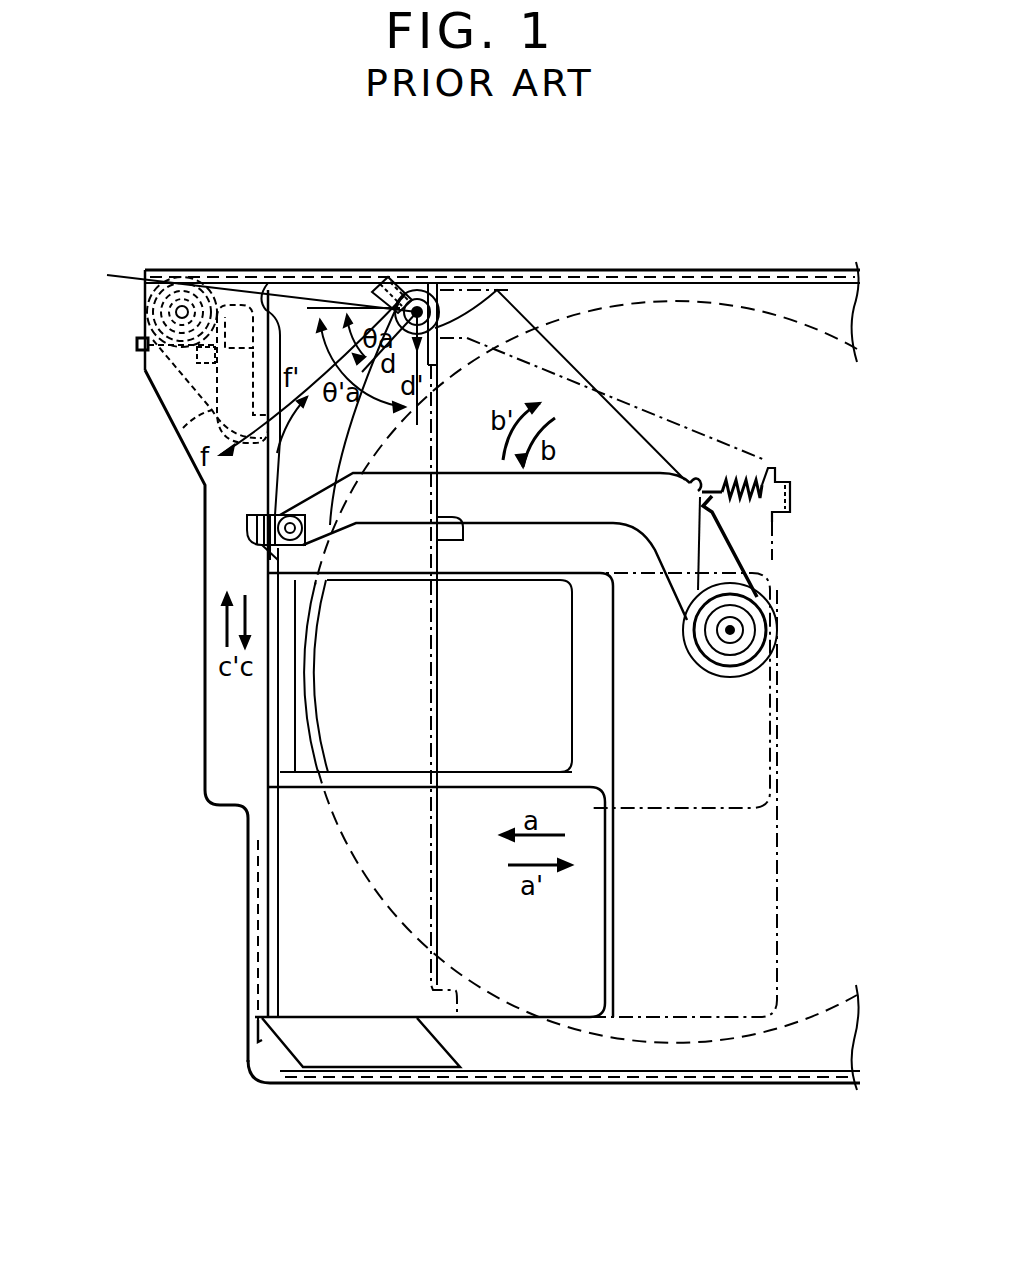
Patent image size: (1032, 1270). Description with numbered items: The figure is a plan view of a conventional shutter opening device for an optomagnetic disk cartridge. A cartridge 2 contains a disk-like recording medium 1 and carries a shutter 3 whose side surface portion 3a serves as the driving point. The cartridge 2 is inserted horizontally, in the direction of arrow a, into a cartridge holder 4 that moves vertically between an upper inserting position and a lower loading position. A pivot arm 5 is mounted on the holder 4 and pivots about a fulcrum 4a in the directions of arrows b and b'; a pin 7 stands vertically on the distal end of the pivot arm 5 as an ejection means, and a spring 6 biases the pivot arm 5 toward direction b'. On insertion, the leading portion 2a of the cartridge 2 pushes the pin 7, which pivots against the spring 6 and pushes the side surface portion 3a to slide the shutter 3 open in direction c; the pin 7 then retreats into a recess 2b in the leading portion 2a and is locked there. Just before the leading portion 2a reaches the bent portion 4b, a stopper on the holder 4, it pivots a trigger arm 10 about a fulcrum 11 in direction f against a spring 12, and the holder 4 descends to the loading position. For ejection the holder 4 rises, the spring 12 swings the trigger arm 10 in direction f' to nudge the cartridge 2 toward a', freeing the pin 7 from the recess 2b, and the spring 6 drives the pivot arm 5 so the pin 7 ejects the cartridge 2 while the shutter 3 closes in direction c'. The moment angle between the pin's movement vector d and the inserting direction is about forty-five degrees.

The disk-like recording medium 1 is at (320, 696).
The cartridge 2 is at (530, 1084).
The leading portion 2a is at (283, 320).
The recess 2b is at (465, 540).
The shutter 3 is at (272, 821).
The side surface portion 3a is at (420, 290).
The cartridge holder 4 is at (252, 288).
The fulcrum 4a is at (728, 640).
The bent portion 4b is at (248, 937).
The pivot arm 5 is at (583, 486).
The spring 6 is at (757, 482).
The pin 7 is at (427, 292).
The trigger arm 10 is at (183, 428).
The fulcrum 11 is at (183, 302).
The spring 12 is at (150, 365).